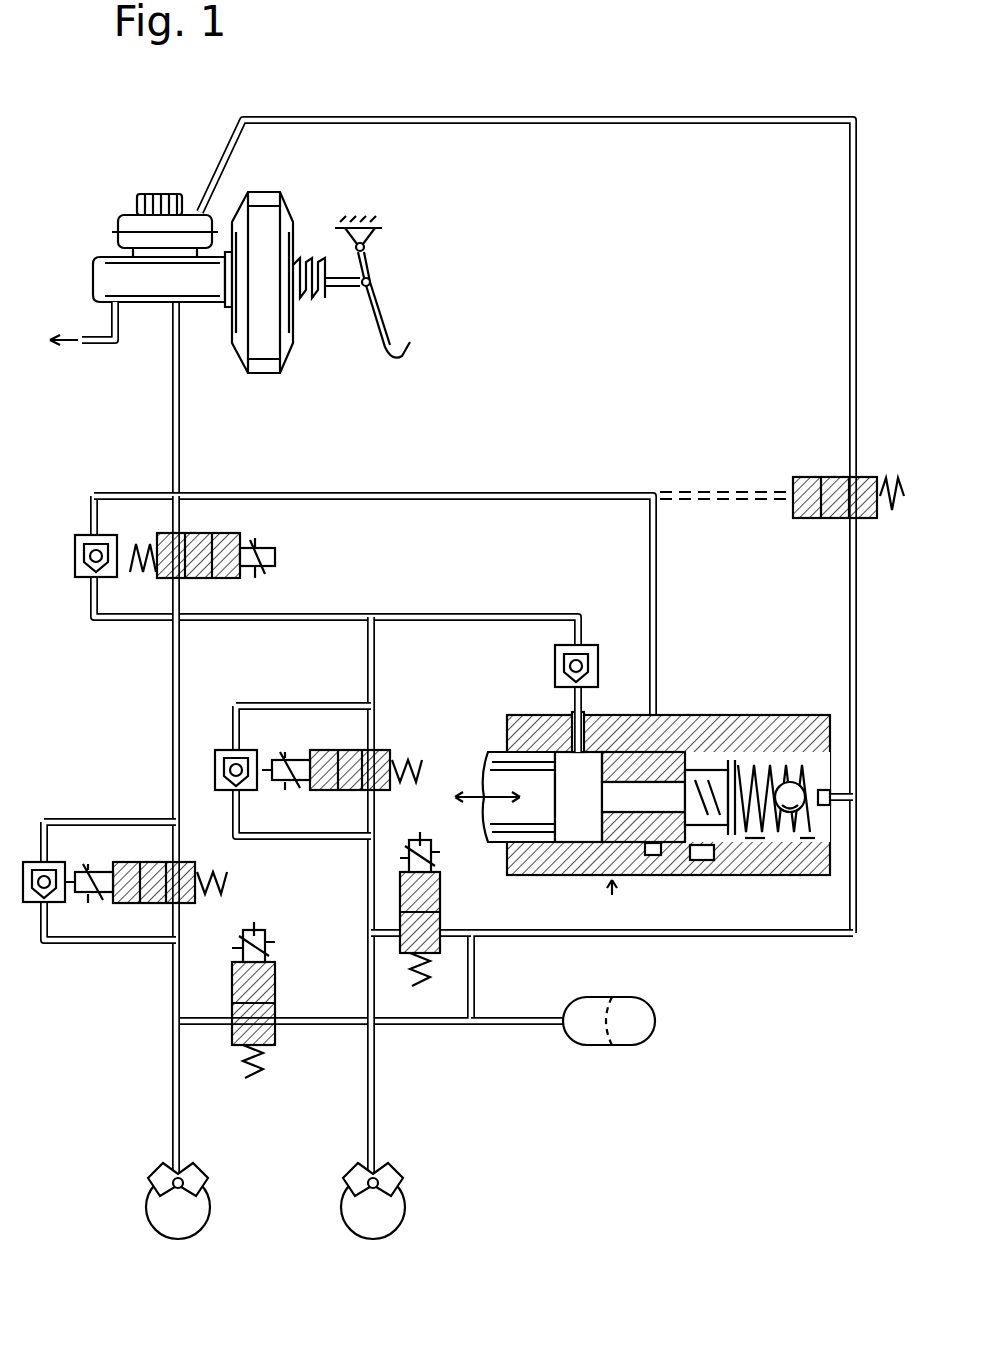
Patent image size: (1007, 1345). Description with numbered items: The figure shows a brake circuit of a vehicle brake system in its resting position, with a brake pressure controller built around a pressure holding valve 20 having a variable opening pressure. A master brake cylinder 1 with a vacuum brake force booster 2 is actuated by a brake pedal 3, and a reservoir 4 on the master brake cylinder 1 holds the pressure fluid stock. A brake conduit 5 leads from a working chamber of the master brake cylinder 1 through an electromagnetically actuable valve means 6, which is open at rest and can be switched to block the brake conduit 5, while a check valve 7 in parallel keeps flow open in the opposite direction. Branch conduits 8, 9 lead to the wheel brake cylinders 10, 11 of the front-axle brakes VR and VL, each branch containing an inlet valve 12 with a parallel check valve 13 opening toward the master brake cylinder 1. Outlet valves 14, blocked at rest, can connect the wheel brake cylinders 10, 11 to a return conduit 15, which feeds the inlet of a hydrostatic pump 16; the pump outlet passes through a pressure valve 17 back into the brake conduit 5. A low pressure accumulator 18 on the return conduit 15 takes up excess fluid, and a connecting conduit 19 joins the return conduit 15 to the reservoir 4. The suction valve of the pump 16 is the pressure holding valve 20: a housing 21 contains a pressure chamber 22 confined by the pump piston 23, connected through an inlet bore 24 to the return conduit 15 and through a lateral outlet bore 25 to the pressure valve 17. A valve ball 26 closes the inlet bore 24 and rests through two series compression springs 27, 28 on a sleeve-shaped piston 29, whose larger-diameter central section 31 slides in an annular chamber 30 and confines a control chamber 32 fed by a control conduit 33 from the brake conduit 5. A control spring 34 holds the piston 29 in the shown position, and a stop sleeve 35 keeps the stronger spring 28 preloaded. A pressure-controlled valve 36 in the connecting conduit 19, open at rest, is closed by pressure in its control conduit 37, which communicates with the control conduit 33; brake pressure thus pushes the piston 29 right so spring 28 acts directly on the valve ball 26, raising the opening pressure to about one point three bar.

The master brake cylinder 1 is at (92, 270).
The vacuum brake force booster 2 is at (268, 228).
The brake pedal 3 is at (385, 322).
The reservoir 4 is at (128, 218).
The brake conduit 5 is at (180, 442).
The valve means 6 is at (228, 538).
The check valve 7 is at (75, 552).
The branch conduit 8 is at (172, 678).
The branch conduit 9 is at (378, 678).
The wheel brake cylinder 10 is at (162, 1175).
The wheel brake cylinder 11 is at (390, 1175).
The inlet valve 12 is at (390, 752).
The check valve 13 is at (222, 752).
The outlet valve 14 is at (400, 902).
The return conduit 15 is at (762, 935).
The hydrostatic pump 16 is at (610, 878).
The pressure valve 17 is at (582, 645).
The low pressure accumulator 18 is at (638, 1045).
The connecting conduit 19 is at (852, 290).
The pressure holding valve 20 is at (686, 773).
The housing 21 is at (740, 718).
The pressure chamber 22 is at (586, 840).
The pump piston 23 is at (535, 840).
The inlet bore 24 is at (832, 790).
The outlet bore 25 is at (572, 752).
The valve ball 26 is at (805, 805).
The compression spring 27 is at (770, 762).
The compression spring 28 is at (730, 760).
The piston 29 is at (632, 765).
The annular chamber 30 is at (705, 860).
The central section 31 is at (690, 772).
The control chamber 32 is at (652, 855).
The control conduit 33 is at (570, 494).
The control spring 34 is at (808, 840).
The stop sleeve 35 is at (760, 840).
The pressure-controlled valve 36 is at (805, 477).
The control conduit 37 is at (706, 492).